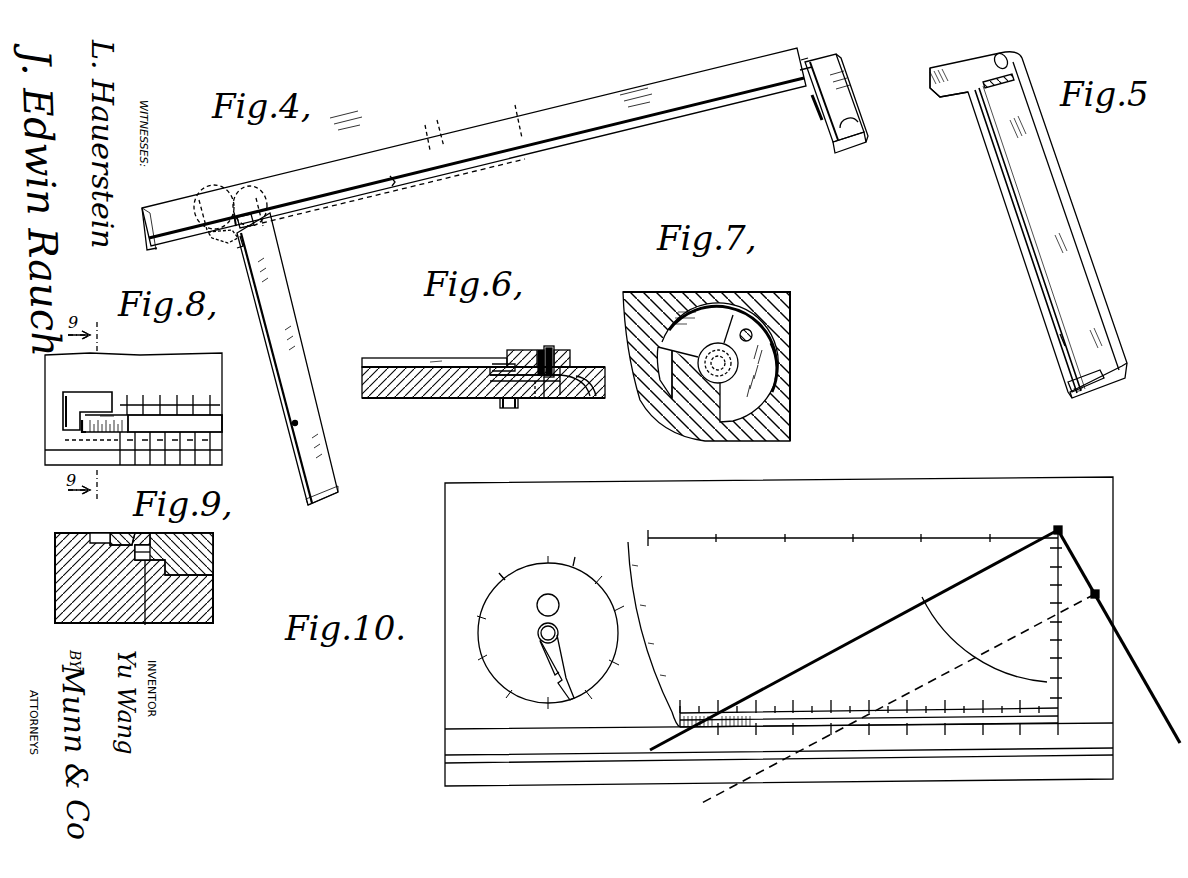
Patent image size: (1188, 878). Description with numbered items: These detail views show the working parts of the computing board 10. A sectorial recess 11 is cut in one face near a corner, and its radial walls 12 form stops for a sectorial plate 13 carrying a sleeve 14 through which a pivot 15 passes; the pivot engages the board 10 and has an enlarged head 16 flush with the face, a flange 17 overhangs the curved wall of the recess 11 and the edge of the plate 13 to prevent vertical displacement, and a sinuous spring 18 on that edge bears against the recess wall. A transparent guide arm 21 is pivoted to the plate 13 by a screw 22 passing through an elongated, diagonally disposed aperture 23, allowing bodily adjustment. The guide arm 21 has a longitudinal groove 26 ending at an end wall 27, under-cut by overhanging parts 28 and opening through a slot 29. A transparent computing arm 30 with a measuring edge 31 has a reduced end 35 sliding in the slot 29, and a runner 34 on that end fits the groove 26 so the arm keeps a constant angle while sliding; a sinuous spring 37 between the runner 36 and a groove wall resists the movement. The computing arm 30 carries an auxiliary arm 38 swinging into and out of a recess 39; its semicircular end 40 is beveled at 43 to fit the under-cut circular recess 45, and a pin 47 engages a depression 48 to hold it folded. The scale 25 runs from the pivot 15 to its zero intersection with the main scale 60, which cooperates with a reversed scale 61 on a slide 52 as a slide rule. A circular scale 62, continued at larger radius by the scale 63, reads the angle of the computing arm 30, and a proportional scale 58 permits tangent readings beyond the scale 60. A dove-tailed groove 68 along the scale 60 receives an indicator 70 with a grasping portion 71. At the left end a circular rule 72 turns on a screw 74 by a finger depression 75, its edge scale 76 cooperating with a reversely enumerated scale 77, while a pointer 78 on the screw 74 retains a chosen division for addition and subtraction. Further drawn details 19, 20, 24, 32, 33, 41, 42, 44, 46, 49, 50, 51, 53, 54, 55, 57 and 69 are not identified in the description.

In FIG. 6, the board 10 is at (457, 390).
In FIG. 7, the board 10 is at (773, 298).
In FIG. 8, the board 10 is at (183, 353).
In FIG. 9, the board 10 is at (200, 597).
In FIG. 10, the board 10 is at (965, 480).
In FIG. 6, the sectorial recess 11 is at (546, 378).
In FIG. 7, the sectorial recess 11 is at (688, 322).
In FIG. 7, the radial walls 12 is at (718, 398).
In FIG. 6, the sectorial plate 13 is at (522, 381).
In FIG. 7, the sectorial plate 13 is at (762, 372).
In FIG. 6, the sleeve 14 is at (498, 366).
In FIG. 6, the pivot 15 is at (506, 403).
In FIG. 6, the enlarged head 16 is at (487, 362).
In FIG. 7, the enlarged head 16 is at (717, 345).
In FIG. 6, the flange 17 is at (570, 372).
In FIG. 6, the sinuous spring 18 is at (590, 396).
In FIG. 7, the sinuous spring 18 is at (712, 312).
In FIG. 6, the stop 19 is at (562, 383).
In FIG. 7, the stop 19 is at (777, 345).
In FIG. 6, the pin 20 is at (536, 383).
In FIG. 7, the pin 20 is at (776, 333).
In FIG. 5, the guide arm 21 is at (1075, 228).
In FIG. 6, the guide arm 21 is at (530, 349).
In FIG. 10, the guide arm 21 is at (1076, 560).
In FIG. 6, the screw 22 is at (549, 346).
In FIG. 7, the screw 22 is at (746, 328).
In FIG. 5, the elongated aperture 23 is at (1002, 52).
In FIG. 6, the elongated aperture 23 is at (564, 353).
In FIG. 7, the pointer 24 is at (697, 352).
In FIG. 10, the scale 25 is at (1062, 645).
In FIG. 5, the groove 26 is at (1035, 196).
In FIG. 5, the end wall 27 is at (1015, 77).
In FIG. 5, the overhanging parts 28 is at (1076, 382).
In FIG. 5, the slot 29 is at (1052, 328).
In FIG. 6, the slot 29 is at (517, 350).
In FIG. 4, the computing arm 30 is at (581, 103).
In FIG. 6, the computing arm 30 is at (400, 363).
In FIG. 10, the computing arm 30 is at (808, 658).
In FIG. 4, the measuring edge 31 is at (650, 125).
In FIG. 5, the head 32 is at (954, 84).
In FIG. 4, the slot 33 is at (806, 88).
In FIG. 4, the runner 34 is at (842, 73).
In FIG. 4, the reduced end 35 is at (804, 60).
In FIG. 4, the runner 36 is at (857, 122).
In FIG. 4, the sinuous spring 37 is at (814, 108).
In FIG. 4, the auxiliary arm 38 is at (288, 277).
In FIG. 4, the recess 39 is at (393, 178).
In FIG. 4, the semicircular end 40 is at (247, 186).
In FIG. 4, the clamp plate 41 is at (258, 200).
In FIG. 4, the bracket 42 is at (256, 220).
In FIG. 4, the bevel 43 is at (239, 245).
In FIG. 4, the lug 44 is at (208, 198).
In FIG. 4, the circular recess 45 is at (226, 233).
In FIG. 4, the screw 46 is at (234, 213).
In FIG. 4, the pin 47 is at (300, 423).
In FIG. 4, the depression 48 is at (438, 138).
In FIG. 4, the end 49 is at (519, 125).
In FIG. 4, the groove 50 is at (512, 163).
In FIG. 9, the ledge 51 is at (190, 579).
In FIG. 9, the slide 52 is at (200, 551).
In FIG. 10, the slide 52 is at (460, 741).
In FIG. 9, the section line 53 is at (152, 602).
In FIG. 9, the groove 54 is at (135, 557).
In FIG. 10, the lower rail 55 is at (563, 757).
In FIG. 10, the horizontal scale 57 is at (676, 724).
In FIG. 10, the scale 58 is at (843, 538).
In FIG. 10, the main scale 60 is at (960, 708).
In FIG. 10, the scale 61 is at (948, 727).
In FIG. 10, the circular scale 62 is at (958, 637).
In FIG. 10, the scale 63 is at (643, 623).
In FIG. 8, the dove-tailed groove 68 is at (212, 425).
In FIG. 9, the dove-tailed groove 68 is at (142, 545).
In FIG. 10, the dove-tailed groove 68 is at (818, 708).
In FIG. 8, the recess 69 is at (92, 392).
In FIG. 9, the recess 69 is at (96, 533).
In FIG. 8, the indicator 70 is at (116, 433).
In FIG. 9, the indicator 70 is at (123, 528).
In FIG. 10, the indicator 70 is at (686, 700).
In FIG. 8, the grasping portion 71 is at (80, 425).
In FIG. 10, the circular rule 72 is at (512, 686).
In FIG. 10, the screw 74 is at (540, 632).
In FIG. 10, the finger depression 75 is at (555, 606).
In FIG. 10, the scale 76 is at (575, 566).
In FIG. 10, the scale 77 is at (486, 588).
In FIG. 10, the pointer 78 is at (552, 658).